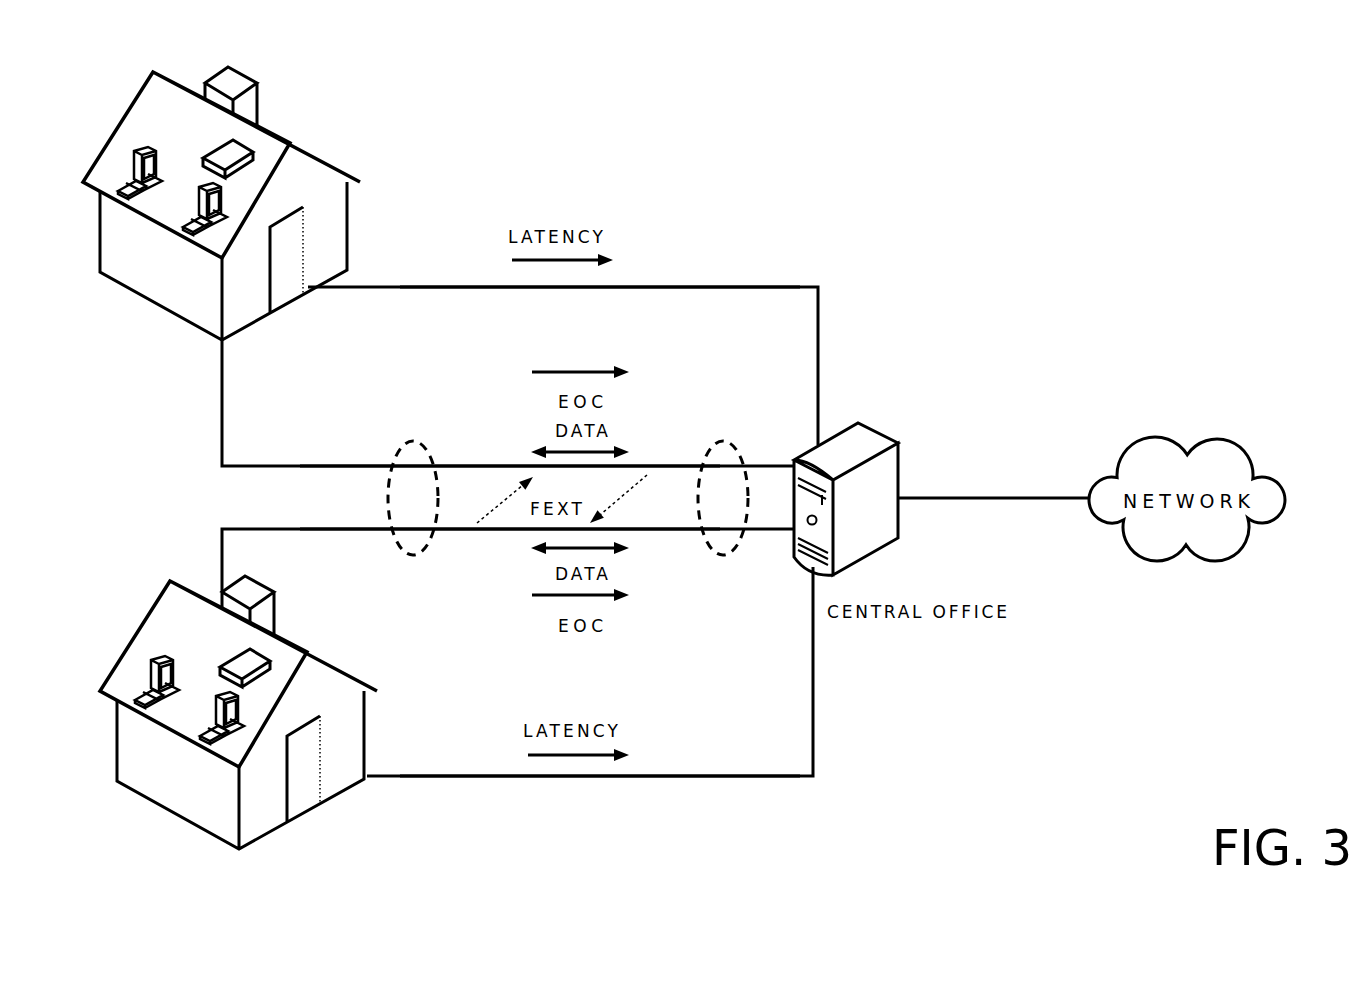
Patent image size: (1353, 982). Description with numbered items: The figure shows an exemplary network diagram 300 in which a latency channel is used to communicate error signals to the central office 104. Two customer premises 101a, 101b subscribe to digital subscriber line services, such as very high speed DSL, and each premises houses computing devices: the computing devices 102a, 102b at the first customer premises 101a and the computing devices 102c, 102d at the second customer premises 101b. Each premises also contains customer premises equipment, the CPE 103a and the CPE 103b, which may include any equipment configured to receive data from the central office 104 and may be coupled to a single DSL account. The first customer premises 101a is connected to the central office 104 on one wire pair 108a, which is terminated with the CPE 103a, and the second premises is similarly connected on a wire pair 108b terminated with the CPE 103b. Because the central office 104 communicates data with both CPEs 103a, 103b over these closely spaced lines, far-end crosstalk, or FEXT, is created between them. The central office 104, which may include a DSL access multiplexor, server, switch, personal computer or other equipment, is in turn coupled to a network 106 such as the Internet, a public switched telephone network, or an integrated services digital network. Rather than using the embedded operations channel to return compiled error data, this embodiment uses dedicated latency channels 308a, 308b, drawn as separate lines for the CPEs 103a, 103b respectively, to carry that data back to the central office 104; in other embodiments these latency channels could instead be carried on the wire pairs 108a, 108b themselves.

The network diagram 300 is at (1064, 234).
The customer premises 101a is at (177, 318).
The customer premises 101b is at (195, 827).
The computing device 102a is at (142, 148).
The computing device 102b is at (213, 188).
The computing device 102c is at (158, 658).
The computing device 102d is at (233, 698).
The customer premises equipment 103a is at (252, 163).
The customer premises equipment 103b is at (272, 672).
The central office 104 is at (858, 418).
The network 106 is at (1160, 437).
The wire pair 108a is at (455, 464).
The wire pair 108b is at (453, 531).
The dedicated latency channel 308a is at (692, 283).
The dedicated latency channel 308b is at (672, 773).